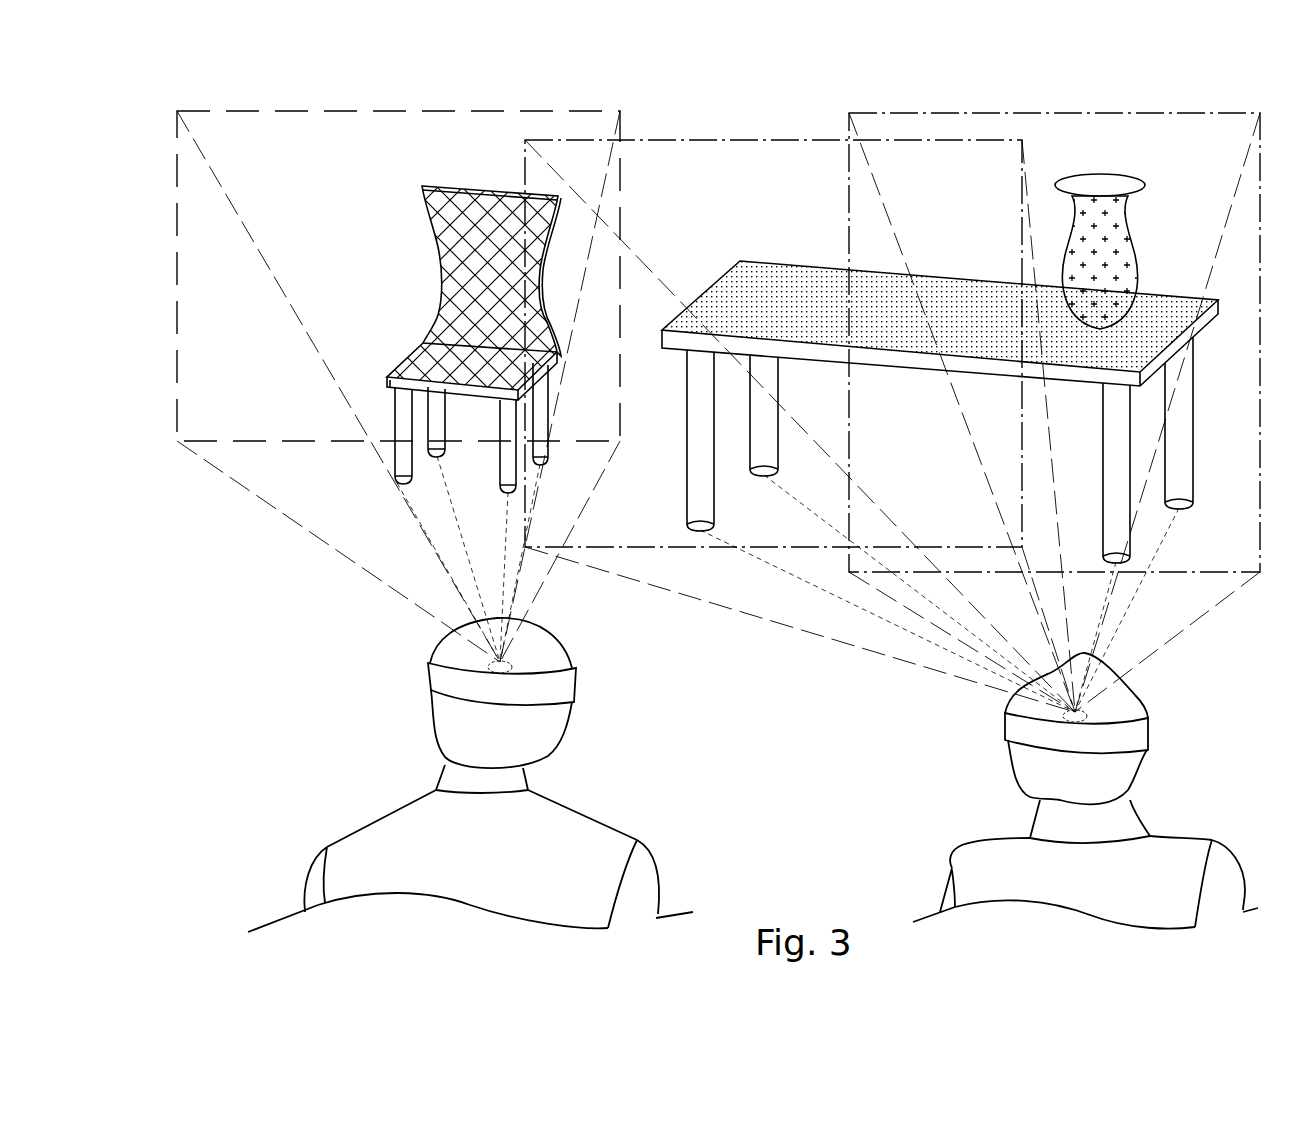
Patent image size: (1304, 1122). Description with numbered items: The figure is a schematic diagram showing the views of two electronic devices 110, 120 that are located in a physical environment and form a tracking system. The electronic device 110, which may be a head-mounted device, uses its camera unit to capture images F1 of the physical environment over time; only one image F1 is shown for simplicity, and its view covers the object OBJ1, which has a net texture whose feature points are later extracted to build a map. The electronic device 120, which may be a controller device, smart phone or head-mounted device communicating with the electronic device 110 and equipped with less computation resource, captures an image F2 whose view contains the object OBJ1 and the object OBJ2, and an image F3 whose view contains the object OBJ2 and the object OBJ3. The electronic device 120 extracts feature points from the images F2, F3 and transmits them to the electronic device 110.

The image F1 is at (342, 111).
The image F2 is at (692, 140).
The image F3 is at (962, 113).
The object OBJ1 is at (470, 187).
The object OBJ2 is at (792, 262).
The object OBJ3 is at (1098, 176).
The electronic device 110 is at (575, 684).
The electronic device 120 is at (1150, 729).